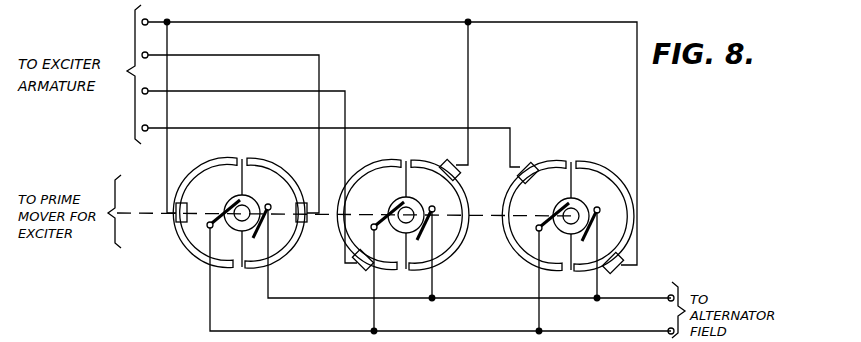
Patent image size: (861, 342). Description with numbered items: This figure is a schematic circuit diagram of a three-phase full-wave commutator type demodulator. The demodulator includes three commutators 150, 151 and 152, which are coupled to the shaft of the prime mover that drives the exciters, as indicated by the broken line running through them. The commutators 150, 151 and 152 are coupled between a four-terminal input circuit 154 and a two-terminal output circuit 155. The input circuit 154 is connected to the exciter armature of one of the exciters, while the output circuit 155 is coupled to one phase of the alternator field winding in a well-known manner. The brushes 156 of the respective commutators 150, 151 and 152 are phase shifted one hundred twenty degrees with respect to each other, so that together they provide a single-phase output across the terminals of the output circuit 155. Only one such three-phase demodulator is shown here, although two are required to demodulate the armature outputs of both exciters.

The commutator 150 is at (281, 160).
The commutator 151 is at (369, 174).
The commutator 152 is at (610, 163).
The four-terminal input circuit 154 is at (150, 55).
The two-terminal output circuit 155 is at (668, 299).
The brushes 156 is at (179, 224).